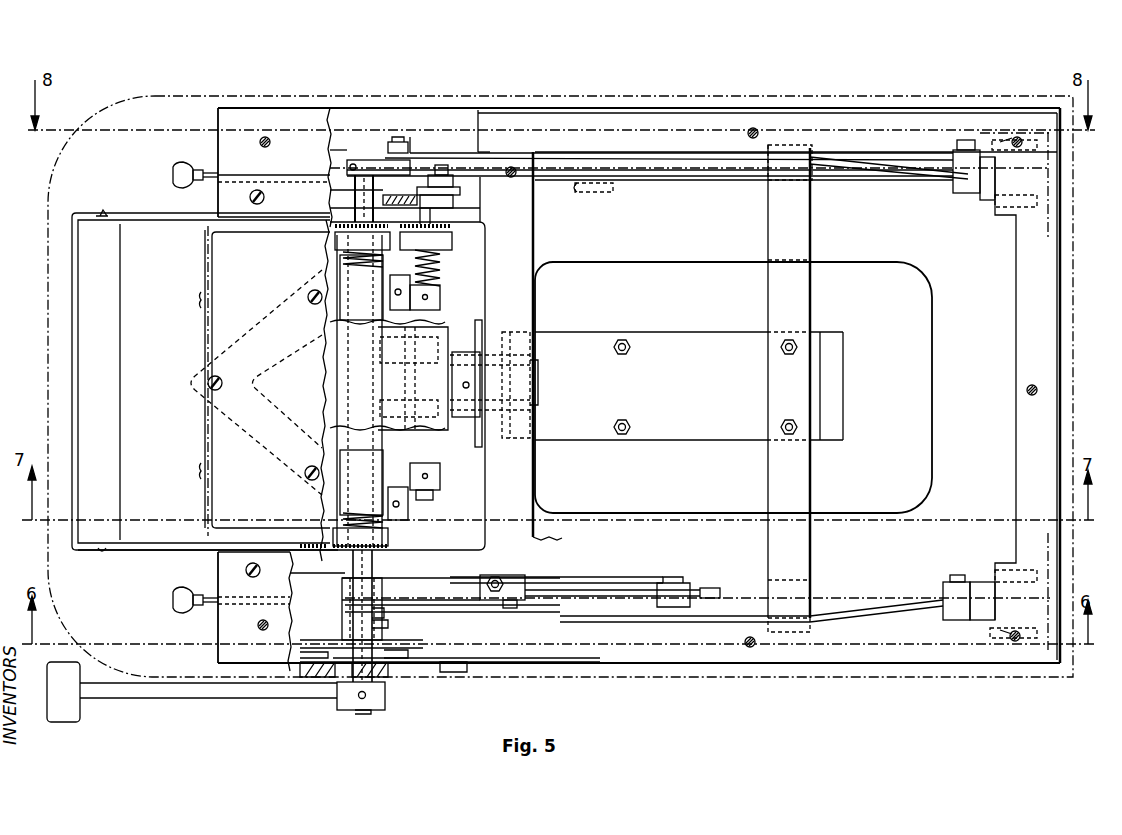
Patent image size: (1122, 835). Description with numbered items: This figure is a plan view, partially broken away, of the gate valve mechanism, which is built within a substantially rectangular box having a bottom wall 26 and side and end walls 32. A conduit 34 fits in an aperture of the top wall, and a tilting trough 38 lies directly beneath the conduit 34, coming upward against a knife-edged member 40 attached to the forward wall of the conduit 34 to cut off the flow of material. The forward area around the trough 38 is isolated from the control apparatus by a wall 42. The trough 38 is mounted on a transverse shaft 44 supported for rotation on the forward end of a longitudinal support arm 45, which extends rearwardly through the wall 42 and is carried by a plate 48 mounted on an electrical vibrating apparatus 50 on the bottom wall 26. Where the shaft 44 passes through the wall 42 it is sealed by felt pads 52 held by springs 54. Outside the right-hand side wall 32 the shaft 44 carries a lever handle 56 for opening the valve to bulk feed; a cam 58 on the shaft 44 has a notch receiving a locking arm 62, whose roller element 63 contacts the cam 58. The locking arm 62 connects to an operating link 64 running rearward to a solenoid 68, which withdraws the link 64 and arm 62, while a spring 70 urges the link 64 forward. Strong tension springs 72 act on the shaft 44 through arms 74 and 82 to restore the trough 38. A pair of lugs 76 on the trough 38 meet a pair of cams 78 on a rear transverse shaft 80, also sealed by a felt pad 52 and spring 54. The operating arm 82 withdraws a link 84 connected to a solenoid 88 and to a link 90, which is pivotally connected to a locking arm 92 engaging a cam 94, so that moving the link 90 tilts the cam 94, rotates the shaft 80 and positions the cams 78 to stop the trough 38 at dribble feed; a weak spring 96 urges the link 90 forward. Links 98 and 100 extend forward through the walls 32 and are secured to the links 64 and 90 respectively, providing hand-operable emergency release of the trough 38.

The bottom wall 26 is at (882, 680).
The side and end walls 32 is at (222, 153).
The conduit 34 is at (260, 380).
The tilting trough 38 is at (126, 376).
The knife-edged member 40 is at (203, 272).
The wall 42 is at (96, 214).
The transverse shaft 44 is at (372, 565).
The support arm 45 is at (404, 366).
The plate 48 is at (656, 436).
The electrical vibrating apparatus 50 is at (880, 272).
The felt pads 52 is at (335, 240).
The springs 54 is at (340, 255).
The lever handle 56 is at (258, 700).
The cam 58 is at (446, 588).
The locking arm 62 is at (532, 590).
The roller element 63 is at (503, 578).
The operating link 64 is at (736, 610).
The solenoid 68 is at (984, 582).
The spring 70 is at (650, 582).
The tension springs 72 is at (698, 138).
The arm 74 is at (360, 632).
The lugs 76 is at (392, 280).
The cams 78 is at (440, 297).
The transverse shaft 80 is at (433, 496).
The operating arm 82 is at (365, 160).
The link 84 is at (380, 142).
The solenoid 88 is at (990, 188).
The link 90 is at (705, 176).
The locking arm 92 is at (455, 196).
The cam 94 is at (347, 197).
The spring 96 is at (552, 198).
The link 98 is at (178, 602).
The link 100 is at (180, 180).